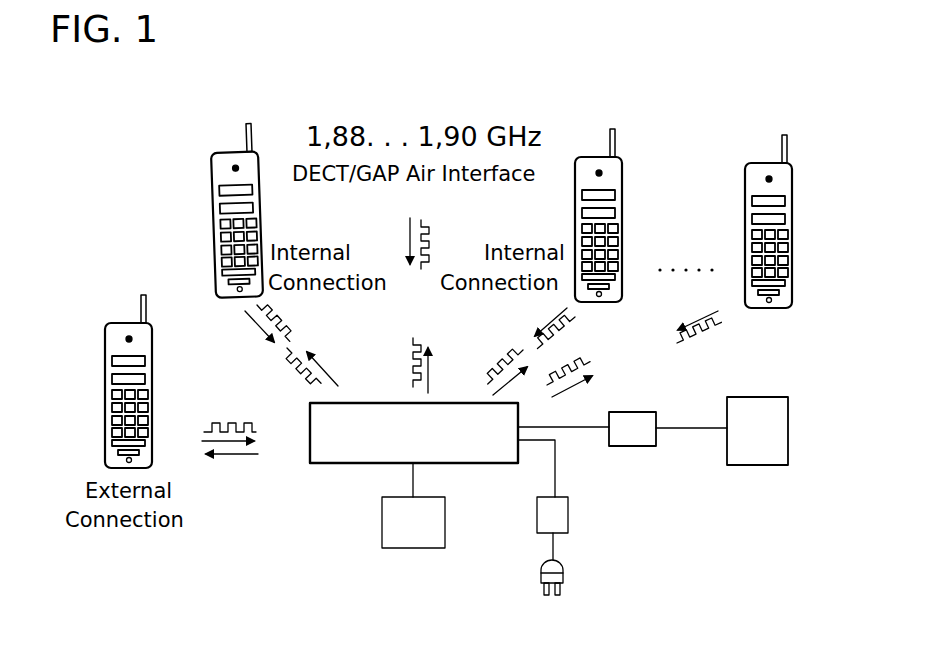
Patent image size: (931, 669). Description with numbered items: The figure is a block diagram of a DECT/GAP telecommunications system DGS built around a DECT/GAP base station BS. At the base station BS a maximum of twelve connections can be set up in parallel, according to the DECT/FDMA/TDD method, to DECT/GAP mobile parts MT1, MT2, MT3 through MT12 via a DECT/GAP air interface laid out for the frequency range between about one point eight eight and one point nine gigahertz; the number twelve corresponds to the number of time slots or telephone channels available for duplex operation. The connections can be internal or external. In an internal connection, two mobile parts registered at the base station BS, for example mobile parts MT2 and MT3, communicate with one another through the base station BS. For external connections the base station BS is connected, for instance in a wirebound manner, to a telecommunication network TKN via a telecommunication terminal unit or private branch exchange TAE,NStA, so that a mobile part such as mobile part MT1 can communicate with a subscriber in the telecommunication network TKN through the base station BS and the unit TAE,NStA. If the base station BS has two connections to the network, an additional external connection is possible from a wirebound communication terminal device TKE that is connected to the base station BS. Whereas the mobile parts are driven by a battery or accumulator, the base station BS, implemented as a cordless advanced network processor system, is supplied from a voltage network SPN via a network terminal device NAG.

The DECT/GAP mobile part MT1 is at (120, 322).
The DECT/GAP mobile part MT2 is at (210, 200).
The DECT/GAP mobile part MT3 is at (622, 233).
The DECT/GAP mobile part MT12 is at (748, 172).
The DECT/GAP base station BS is at (345, 467).
The wirebound communication terminal device TKE is at (410, 548).
The network terminal device NAG is at (537, 515).
The voltage network SPN is at (574, 582).
The telecommunication terminal unit / private branch exchange TAE,NStA is at (630, 446).
The telecommunication network TKN is at (755, 465).
The DECT/GAP system DGS is at (272, 488).